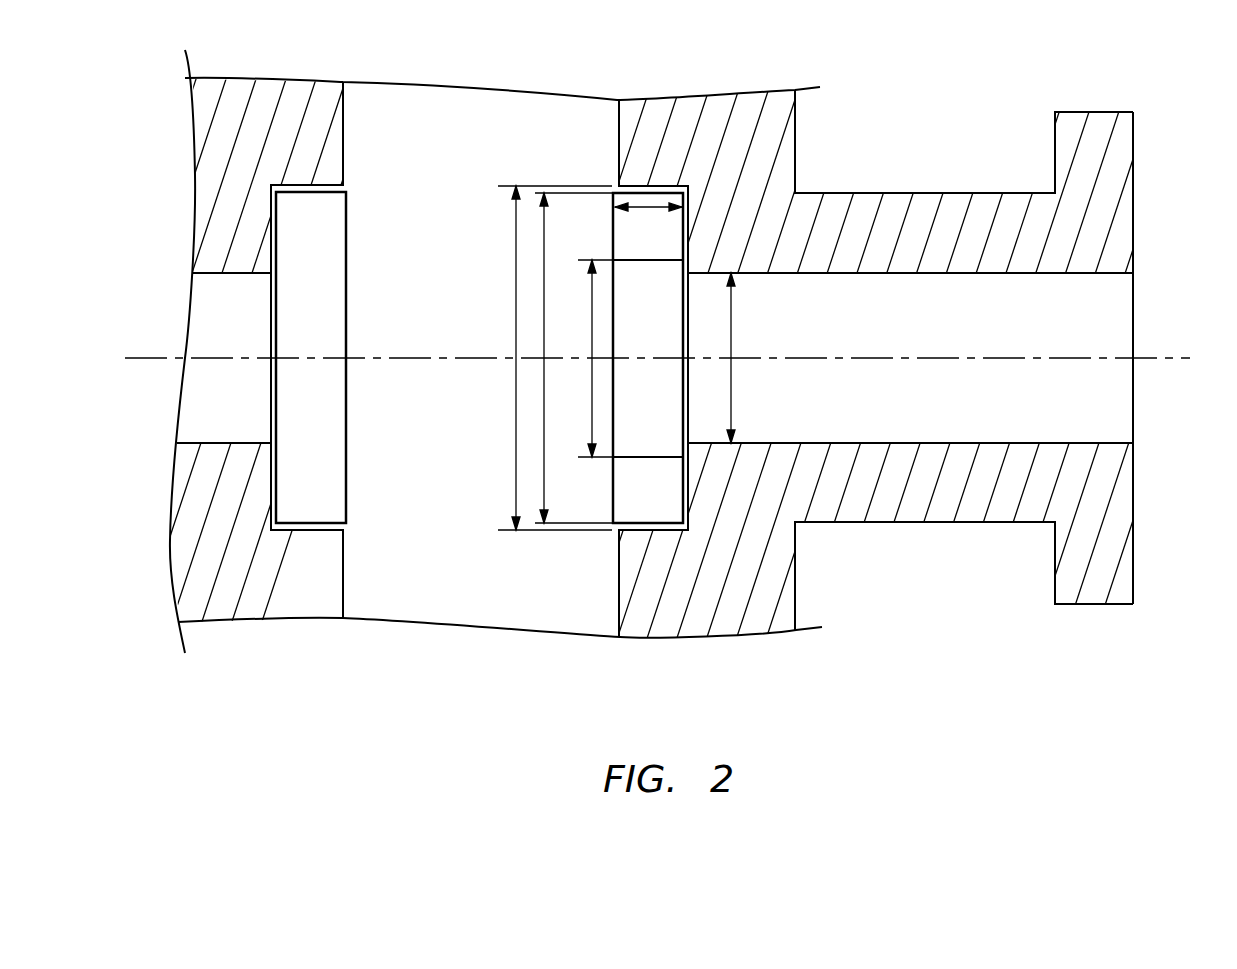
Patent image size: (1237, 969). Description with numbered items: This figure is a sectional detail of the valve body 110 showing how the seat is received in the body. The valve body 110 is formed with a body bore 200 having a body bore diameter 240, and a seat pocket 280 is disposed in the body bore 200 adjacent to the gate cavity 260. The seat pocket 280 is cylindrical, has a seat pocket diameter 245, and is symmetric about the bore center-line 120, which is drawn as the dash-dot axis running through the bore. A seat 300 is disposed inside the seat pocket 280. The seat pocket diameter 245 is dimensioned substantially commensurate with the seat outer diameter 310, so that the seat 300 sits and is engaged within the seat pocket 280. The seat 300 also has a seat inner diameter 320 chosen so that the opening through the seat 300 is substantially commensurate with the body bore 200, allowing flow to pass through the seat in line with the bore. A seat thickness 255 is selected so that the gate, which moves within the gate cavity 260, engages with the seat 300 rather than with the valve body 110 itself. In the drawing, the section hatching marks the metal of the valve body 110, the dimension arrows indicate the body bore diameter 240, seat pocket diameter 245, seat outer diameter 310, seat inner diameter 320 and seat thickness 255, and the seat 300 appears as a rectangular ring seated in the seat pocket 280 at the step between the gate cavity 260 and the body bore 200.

The valve body 110 is at (1117, 322).
The bore center-line 120 is at (1153, 358).
The body bore 200 is at (1072, 395).
The body bore diameter 240 is at (731, 328).
The seat pocket diameter 245 is at (516, 240).
The seat thickness 255 is at (655, 207).
The gate cavity 260 is at (445, 102).
The seat pocket 280 is at (650, 525).
The seat 300 is at (610, 505).
The seat outer diameter 310 is at (544, 315).
The seat inner diameter 320 is at (592, 393).